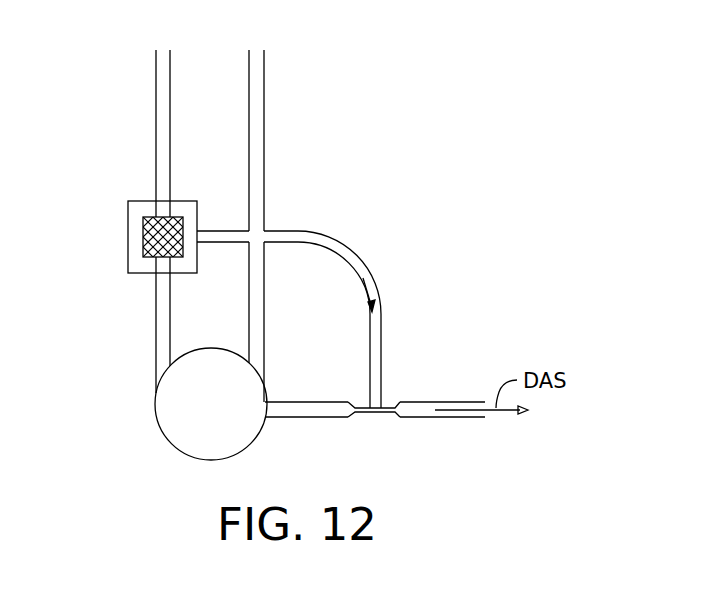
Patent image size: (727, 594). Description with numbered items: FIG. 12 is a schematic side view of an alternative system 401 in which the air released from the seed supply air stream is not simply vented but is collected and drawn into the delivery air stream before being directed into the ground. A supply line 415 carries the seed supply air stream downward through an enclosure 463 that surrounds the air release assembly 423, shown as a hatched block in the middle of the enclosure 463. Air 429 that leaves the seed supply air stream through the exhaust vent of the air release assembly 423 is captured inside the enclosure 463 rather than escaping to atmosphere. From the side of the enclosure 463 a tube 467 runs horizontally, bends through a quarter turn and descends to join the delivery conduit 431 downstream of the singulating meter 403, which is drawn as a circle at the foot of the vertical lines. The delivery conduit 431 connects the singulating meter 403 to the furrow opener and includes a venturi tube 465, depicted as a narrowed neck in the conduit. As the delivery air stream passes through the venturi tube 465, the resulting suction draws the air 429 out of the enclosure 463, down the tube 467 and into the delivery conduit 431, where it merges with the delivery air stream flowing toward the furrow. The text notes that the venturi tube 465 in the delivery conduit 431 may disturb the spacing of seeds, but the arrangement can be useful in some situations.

The system 401 is at (380, 108).
The inlet line 415 is at (156, 93).
The enclosure 463 is at (128, 212).
The air release assembly 423 is at (143, 247).
The tube 467 is at (343, 247).
The air 429 is at (375, 288).
The pump 403 is at (182, 452).
The delivery conduit 431 is at (303, 418).
The venturi tube 465 is at (375, 413).